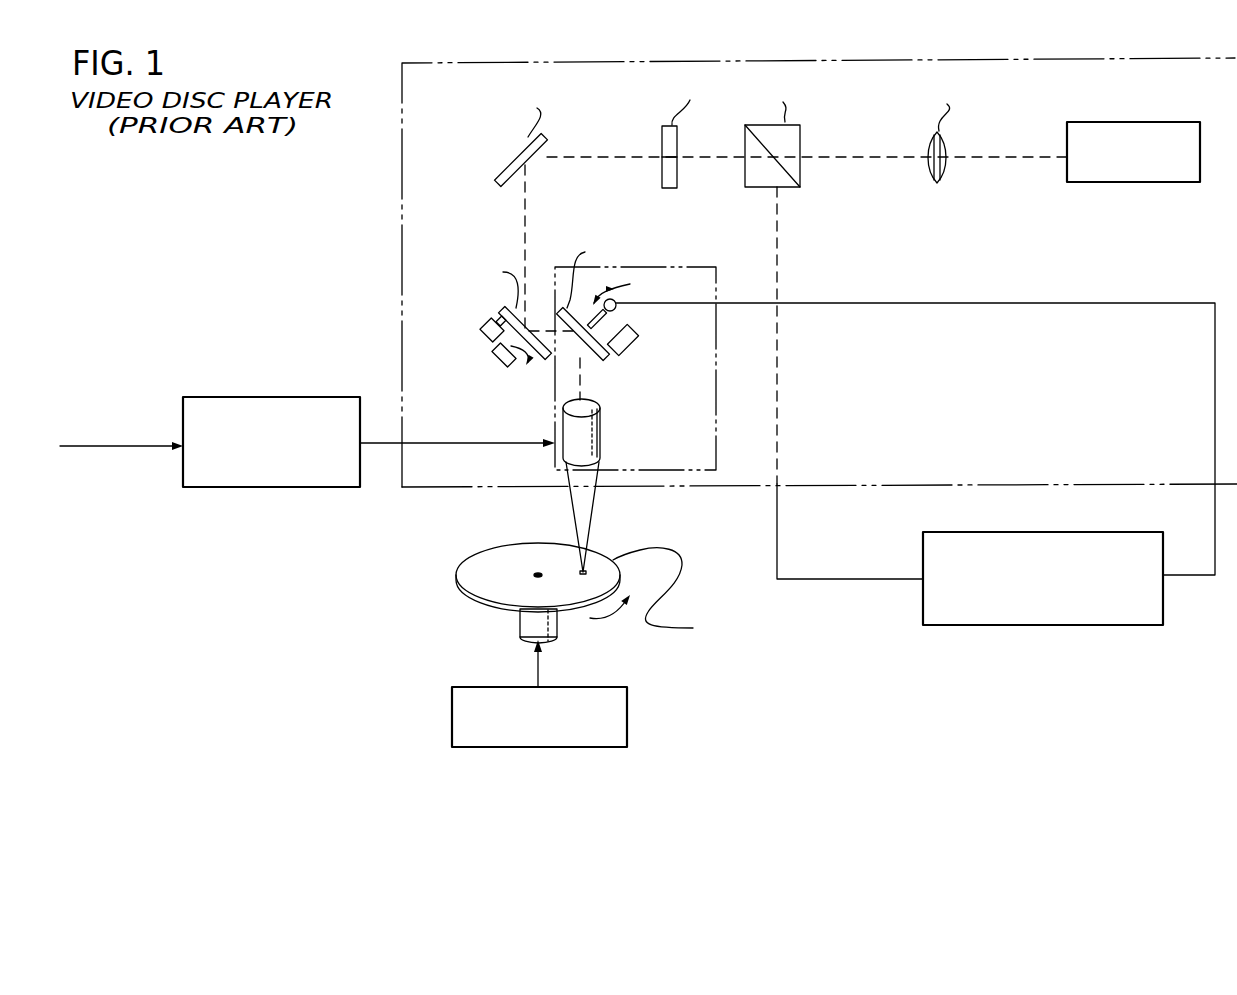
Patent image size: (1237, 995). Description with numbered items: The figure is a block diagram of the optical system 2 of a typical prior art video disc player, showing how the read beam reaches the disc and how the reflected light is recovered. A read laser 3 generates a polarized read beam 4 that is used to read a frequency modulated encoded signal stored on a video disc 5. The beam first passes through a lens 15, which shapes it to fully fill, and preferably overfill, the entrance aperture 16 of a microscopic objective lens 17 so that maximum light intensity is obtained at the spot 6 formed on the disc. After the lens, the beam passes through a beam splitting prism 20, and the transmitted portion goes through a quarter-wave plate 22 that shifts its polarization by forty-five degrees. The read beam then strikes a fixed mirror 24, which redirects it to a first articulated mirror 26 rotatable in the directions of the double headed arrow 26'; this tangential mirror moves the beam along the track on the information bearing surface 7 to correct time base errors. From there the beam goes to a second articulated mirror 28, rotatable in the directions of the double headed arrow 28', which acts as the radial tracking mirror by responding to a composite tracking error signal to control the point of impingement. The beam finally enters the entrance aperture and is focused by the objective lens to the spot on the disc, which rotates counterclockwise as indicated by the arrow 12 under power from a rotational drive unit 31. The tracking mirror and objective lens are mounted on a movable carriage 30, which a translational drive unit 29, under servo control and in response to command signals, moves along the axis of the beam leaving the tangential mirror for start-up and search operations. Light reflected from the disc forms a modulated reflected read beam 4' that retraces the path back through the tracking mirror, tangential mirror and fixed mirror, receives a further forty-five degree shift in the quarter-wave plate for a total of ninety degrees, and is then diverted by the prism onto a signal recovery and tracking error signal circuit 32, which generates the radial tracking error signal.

The optical system 2 is at (396, 191).
The read laser 3 is at (1128, 121).
The read beam 4 is at (792, 262).
The reflected read beam 4' is at (745, 369).
The video disc 5 is at (457, 577).
The spot 6 is at (592, 565).
The information bearing surface 7 is at (485, 552).
The arrow 12 is at (604, 619).
The lens 15 is at (938, 183).
The entrance aperture 16 is at (590, 407).
The microscopic objective lens 17 is at (563, 428).
The beam splitting prism 20 is at (800, 126).
The quarter-wave plate 22 is at (657, 187).
The fixed mirror 24 is at (500, 170).
The first articulated mirror 26 is at (451, 299).
The double headed arrow 26' is at (476, 367).
The second articulated mirror 28 is at (885, 398).
The double headed arrow 28' is at (630, 289).
The translational drive unit 29 is at (260, 397).
The movable carriage 30 is at (716, 270).
The rotational drive unit 31 is at (452, 711).
The signal recovery and tracking error signal circuit 32 is at (993, 626).